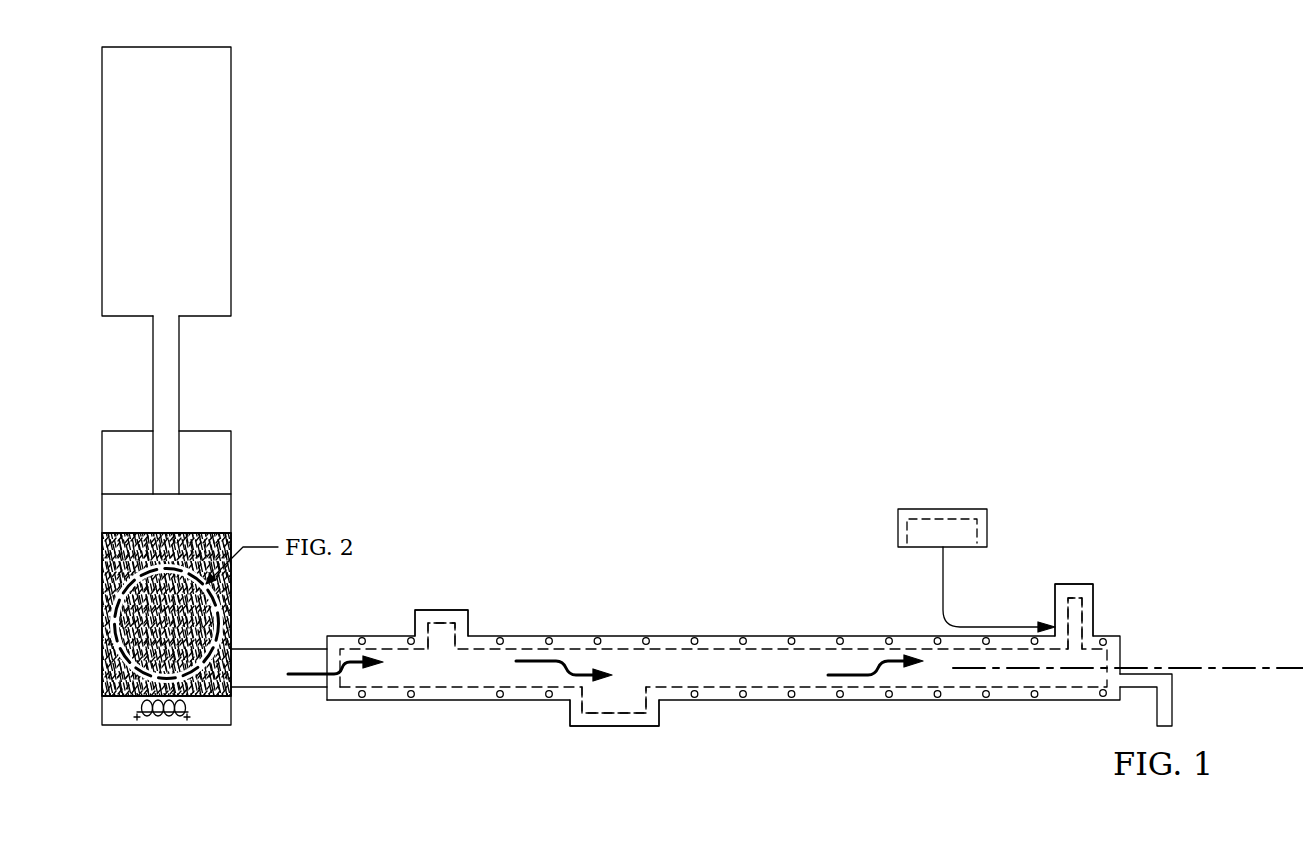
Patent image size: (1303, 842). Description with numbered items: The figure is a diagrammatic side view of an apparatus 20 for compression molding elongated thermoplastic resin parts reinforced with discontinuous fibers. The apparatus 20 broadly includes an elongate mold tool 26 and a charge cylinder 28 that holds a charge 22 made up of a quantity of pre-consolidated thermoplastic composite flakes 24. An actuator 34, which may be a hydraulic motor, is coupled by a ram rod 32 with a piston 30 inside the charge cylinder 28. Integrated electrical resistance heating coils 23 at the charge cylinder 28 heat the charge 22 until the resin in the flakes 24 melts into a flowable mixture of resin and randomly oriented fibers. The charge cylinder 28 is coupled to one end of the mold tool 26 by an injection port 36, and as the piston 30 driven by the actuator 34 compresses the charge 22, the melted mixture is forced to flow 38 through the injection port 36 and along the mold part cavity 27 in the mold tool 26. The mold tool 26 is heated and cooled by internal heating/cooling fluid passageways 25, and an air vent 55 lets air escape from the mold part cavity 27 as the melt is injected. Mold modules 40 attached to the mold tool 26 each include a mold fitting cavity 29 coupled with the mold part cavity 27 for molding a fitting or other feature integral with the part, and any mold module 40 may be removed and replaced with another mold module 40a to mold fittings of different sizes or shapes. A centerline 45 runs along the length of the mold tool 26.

The apparatus 20 is at (462, 497).
The charge 22 is at (138, 635).
The electrical resistance heating coils 23 is at (167, 723).
The thermoplastic composite flakes 24 is at (110, 594).
The heating/cooling fluid passageways 25 is at (362, 637).
The mold tool 26 is at (780, 701).
The mold part cavity 27 is at (713, 648).
The charge cylinder 28 is at (108, 465).
The mold fitting cavity 29 is at (447, 622).
The piston 30 is at (110, 515).
The ram rod 32 is at (158, 373).
The actuator 34 is at (155, 193).
The injection port 36 is at (277, 688).
The flow 38 is at (313, 673).
The mold module 40 is at (433, 610).
The replacement mold module 40a is at (942, 508).
The central axis 45 is at (1278, 670).
The air vent 55 is at (1172, 698).